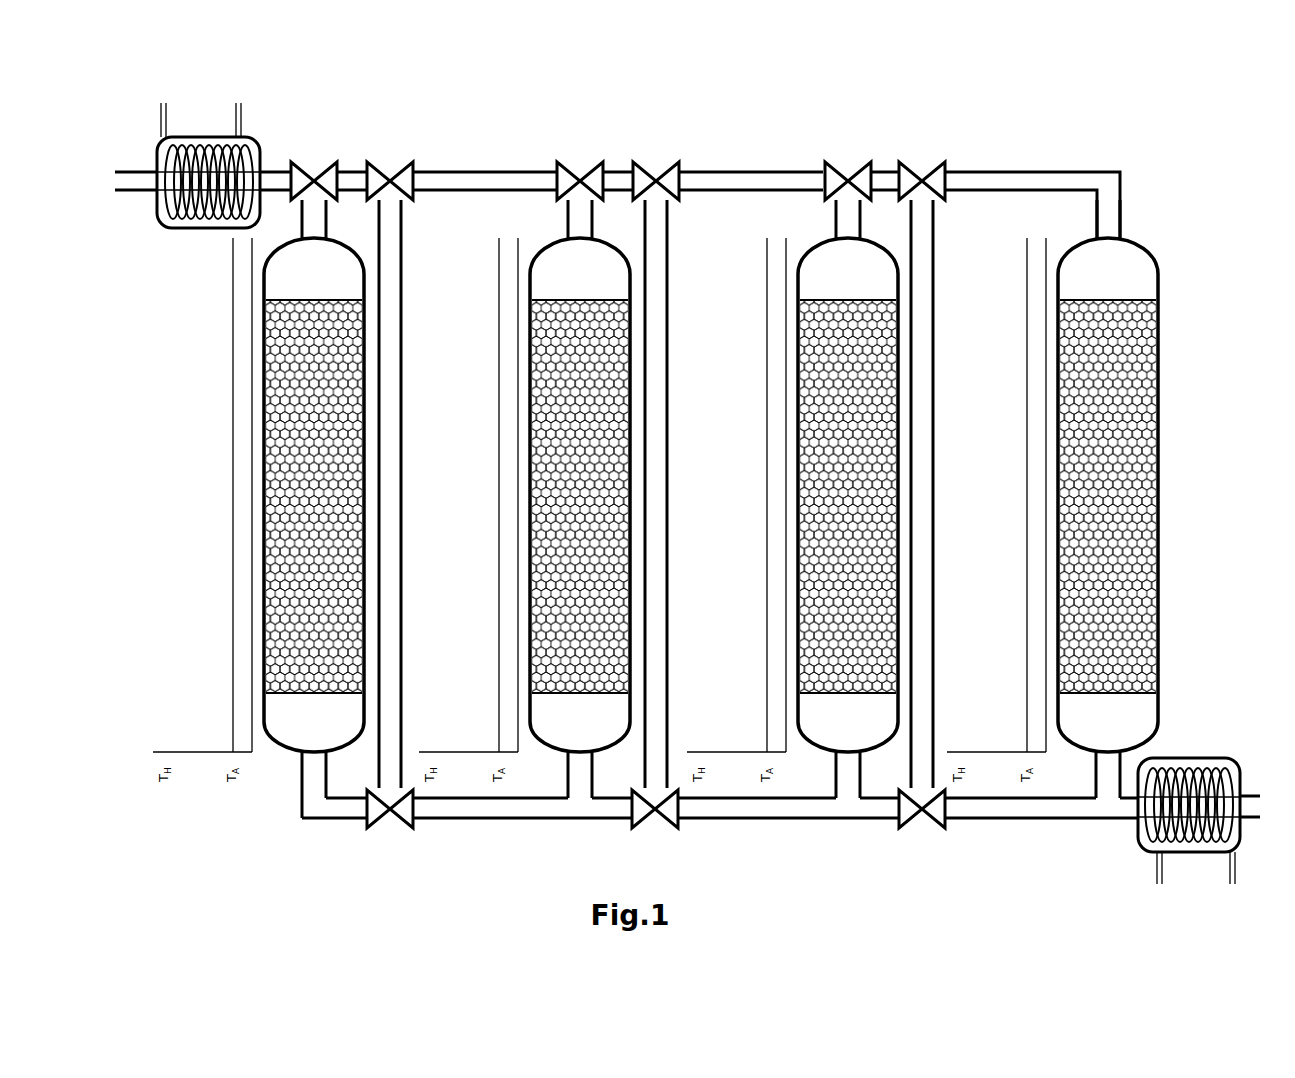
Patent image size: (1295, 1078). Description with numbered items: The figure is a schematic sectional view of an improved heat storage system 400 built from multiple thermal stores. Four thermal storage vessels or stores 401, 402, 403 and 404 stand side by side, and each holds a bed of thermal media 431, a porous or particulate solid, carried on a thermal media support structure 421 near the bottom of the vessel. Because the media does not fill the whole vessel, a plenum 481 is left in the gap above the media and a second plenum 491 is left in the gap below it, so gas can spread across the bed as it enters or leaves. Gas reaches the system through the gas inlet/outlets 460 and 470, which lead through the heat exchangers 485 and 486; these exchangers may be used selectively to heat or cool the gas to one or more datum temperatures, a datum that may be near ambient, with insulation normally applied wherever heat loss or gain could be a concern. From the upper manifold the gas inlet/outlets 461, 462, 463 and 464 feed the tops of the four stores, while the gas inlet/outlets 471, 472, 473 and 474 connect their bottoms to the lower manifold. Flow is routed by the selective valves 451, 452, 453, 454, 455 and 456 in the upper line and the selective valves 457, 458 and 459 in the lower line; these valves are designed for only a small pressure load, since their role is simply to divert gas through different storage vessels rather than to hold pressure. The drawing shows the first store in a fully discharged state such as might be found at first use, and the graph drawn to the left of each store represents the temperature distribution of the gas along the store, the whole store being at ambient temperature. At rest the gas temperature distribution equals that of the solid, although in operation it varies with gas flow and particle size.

The heat storage system 400 is at (681, 519).
The thermal storage vessel 401 is at (262, 271).
The thermal storage vessel 402 is at (528, 271).
The thermal storage vessel 403 is at (796, 271).
The thermal storage vessel 404 is at (1056, 271).
The thermal media support structure 421 is at (321, 694).
The thermal media 431 is at (299, 384).
The selective valve 451 is at (307, 168).
The selective valve 452 is at (383, 170).
The selective valve 453 is at (573, 168).
The selective valve 454 is at (649, 170).
The selective valve 455 is at (840, 168).
The selective valve 456 is at (915, 170).
The selective valve 457 is at (381, 821).
The selective valve 458 is at (646, 821).
The selective valve 459 is at (914, 821).
The gas inlet/outlet 460 is at (148, 181).
The gas inlet/outlet 461 is at (320, 230).
The gas inlet/outlet 462 is at (586, 230).
The gas inlet/outlet 463 is at (854, 230).
The gas inlet/outlet 464 is at (1112, 230).
The gas inlet/outlet 470 is at (1258, 795).
The gas inlet/outlet 471 is at (313, 790).
The gas inlet/outlet 472 is at (579, 790).
The gas inlet/outlet 473 is at (846, 790).
The gas inlet/outlet 474 is at (1106, 790).
The plenum 481 is at (300, 262).
The heat exchanger 485 is at (208, 232).
The heat exchanger 486 is at (1140, 812).
The plenum 491 is at (281, 714).